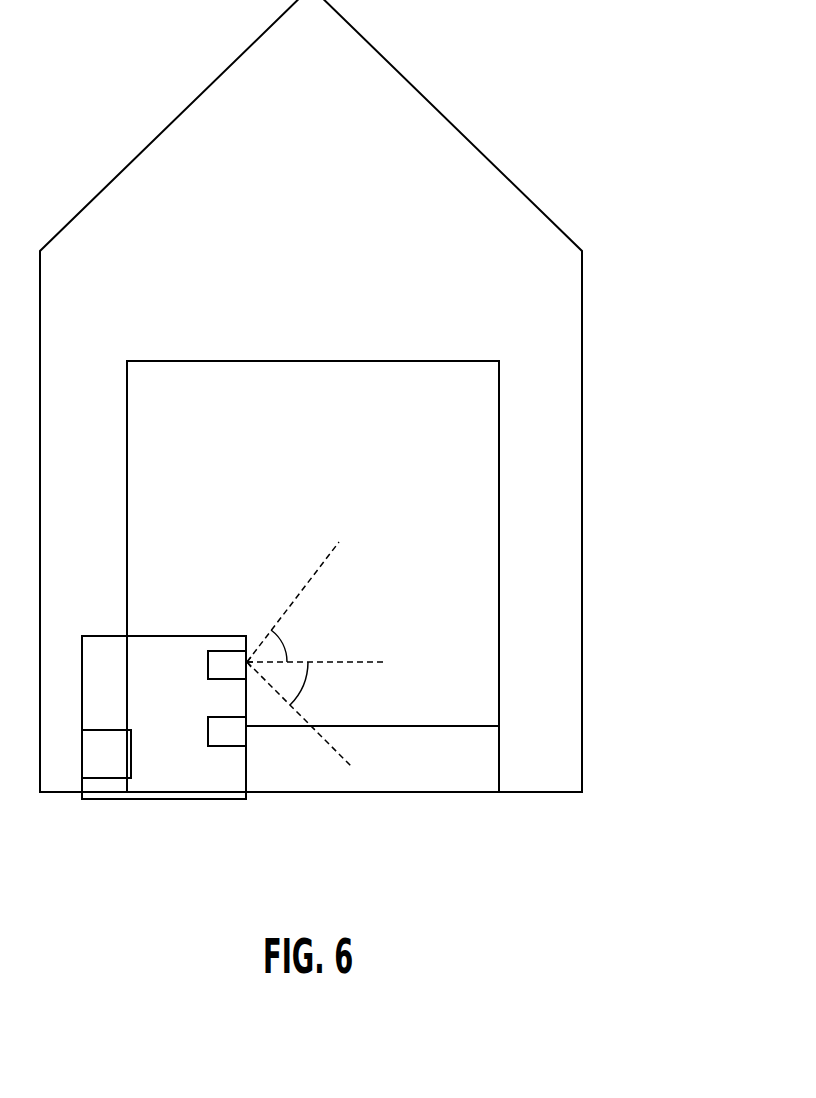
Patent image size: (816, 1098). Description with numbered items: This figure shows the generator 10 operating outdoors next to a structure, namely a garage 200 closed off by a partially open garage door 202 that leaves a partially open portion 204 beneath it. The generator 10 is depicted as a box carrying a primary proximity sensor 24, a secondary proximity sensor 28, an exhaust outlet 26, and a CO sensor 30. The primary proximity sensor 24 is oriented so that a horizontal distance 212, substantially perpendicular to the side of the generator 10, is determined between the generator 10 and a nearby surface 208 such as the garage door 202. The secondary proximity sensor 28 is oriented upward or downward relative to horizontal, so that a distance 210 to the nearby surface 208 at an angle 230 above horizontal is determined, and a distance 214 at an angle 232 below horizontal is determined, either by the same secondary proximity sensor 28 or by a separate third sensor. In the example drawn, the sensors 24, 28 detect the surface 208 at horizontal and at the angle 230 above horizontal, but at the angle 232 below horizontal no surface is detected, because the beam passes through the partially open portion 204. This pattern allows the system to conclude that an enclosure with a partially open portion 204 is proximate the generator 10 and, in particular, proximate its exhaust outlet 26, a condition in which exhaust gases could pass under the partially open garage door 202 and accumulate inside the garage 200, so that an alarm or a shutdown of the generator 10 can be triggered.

The garage 200 is at (583, 212).
The partially open garage door 202 is at (473, 608).
The partially open portion 204 is at (472, 775).
The nearby surface 208 is at (425, 620).
The distance 210 is at (306, 586).
The horizontal distance 212 is at (365, 664).
The distance 214 is at (345, 757).
The angle above horizontal 230 is at (283, 646).
The angle below horizontal 232 is at (305, 682).
The generator 10 is at (115, 646).
The primary proximity sensor 24 is at (230, 662).
The exhaust outlet 26 is at (248, 742).
The secondary proximity sensor 28 is at (216, 670).
The CO sensor 30 is at (98, 763).